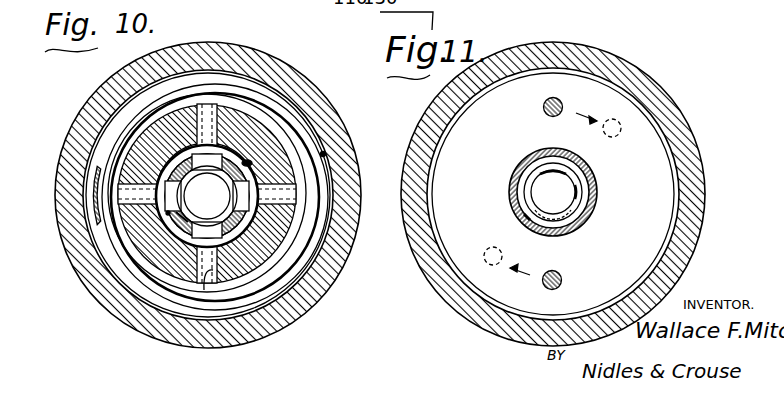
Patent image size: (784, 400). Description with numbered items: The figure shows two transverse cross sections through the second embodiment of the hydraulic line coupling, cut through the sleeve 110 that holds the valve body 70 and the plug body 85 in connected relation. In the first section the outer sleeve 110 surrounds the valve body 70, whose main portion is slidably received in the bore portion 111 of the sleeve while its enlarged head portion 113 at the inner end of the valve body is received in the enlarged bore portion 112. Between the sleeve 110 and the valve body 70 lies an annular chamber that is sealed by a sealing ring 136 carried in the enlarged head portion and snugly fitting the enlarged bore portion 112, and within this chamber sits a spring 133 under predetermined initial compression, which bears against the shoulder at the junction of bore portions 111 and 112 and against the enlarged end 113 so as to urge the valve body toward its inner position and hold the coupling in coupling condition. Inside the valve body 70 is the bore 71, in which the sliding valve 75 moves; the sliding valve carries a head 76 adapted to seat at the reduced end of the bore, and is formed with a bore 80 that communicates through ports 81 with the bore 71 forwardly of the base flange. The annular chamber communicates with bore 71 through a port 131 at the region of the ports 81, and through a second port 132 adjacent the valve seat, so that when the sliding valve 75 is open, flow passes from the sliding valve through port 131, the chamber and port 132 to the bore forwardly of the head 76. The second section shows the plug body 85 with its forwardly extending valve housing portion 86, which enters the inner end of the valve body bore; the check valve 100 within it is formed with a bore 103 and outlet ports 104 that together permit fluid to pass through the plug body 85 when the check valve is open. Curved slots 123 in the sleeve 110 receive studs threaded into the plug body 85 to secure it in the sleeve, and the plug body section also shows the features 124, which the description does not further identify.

In FIG. 10, the valve body 70 is at (282, 228).
In FIG. 10, the bore 71 is at (250, 163).
In FIG. 10, the sliding valve 75 is at (190, 222).
In FIG. 10, the head 76 is at (168, 213).
In FIG. 10, the bore 80 is at (185, 214).
In FIG. 10, the ports 81 is at (232, 184).
In FIG. 11, the plug body 85 is at (657, 182).
In FIG. 11, the valve housing portion 86 is at (590, 207).
In FIG. 11, the check valve 100 is at (575, 172).
In FIG. 11, the bore 103 is at (532, 222).
In FIG. 11, the outlet ports 104 is at (554, 173).
In FIG. 10, the sleeve 110 is at (296, 81).
In FIG. 11, the sleeve 110 is at (650, 89).
In FIG. 10, the bore portion 111 is at (262, 10).
In FIG. 10, the enlarged bore portion 112 is at (326, 155).
In FIG. 10, the enlarged head portion 113 is at (327, 184).
In FIG. 11, the curved slots 123 is at (568, 4).
In FIG. 11, the holes 124 is at (544, 108).
In FIG. 10, the port 131 is at (205, 290).
In FIG. 10, the second port 132 is at (212, 128).
In FIG. 10, the spring 133 is at (97, 167).
In FIG. 11, the sealing ring 136 is at (478, 0).